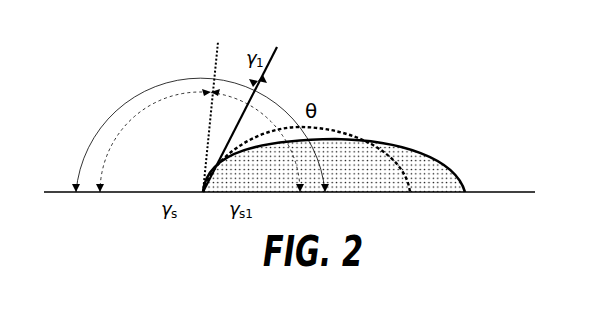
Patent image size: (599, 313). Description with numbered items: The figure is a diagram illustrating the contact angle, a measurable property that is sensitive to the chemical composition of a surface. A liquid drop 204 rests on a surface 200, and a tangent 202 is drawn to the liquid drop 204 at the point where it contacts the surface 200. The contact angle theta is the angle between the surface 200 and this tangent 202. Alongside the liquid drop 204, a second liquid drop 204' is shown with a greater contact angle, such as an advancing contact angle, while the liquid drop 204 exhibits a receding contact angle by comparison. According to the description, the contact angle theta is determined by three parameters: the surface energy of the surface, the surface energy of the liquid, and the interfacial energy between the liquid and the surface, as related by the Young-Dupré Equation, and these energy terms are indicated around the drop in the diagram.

The surface 200 is at (493, 192).
The tangent 202 is at (277, 48).
The liquid drop 204 is at (344, 139).
The liquid drop 204' is at (326, 123).